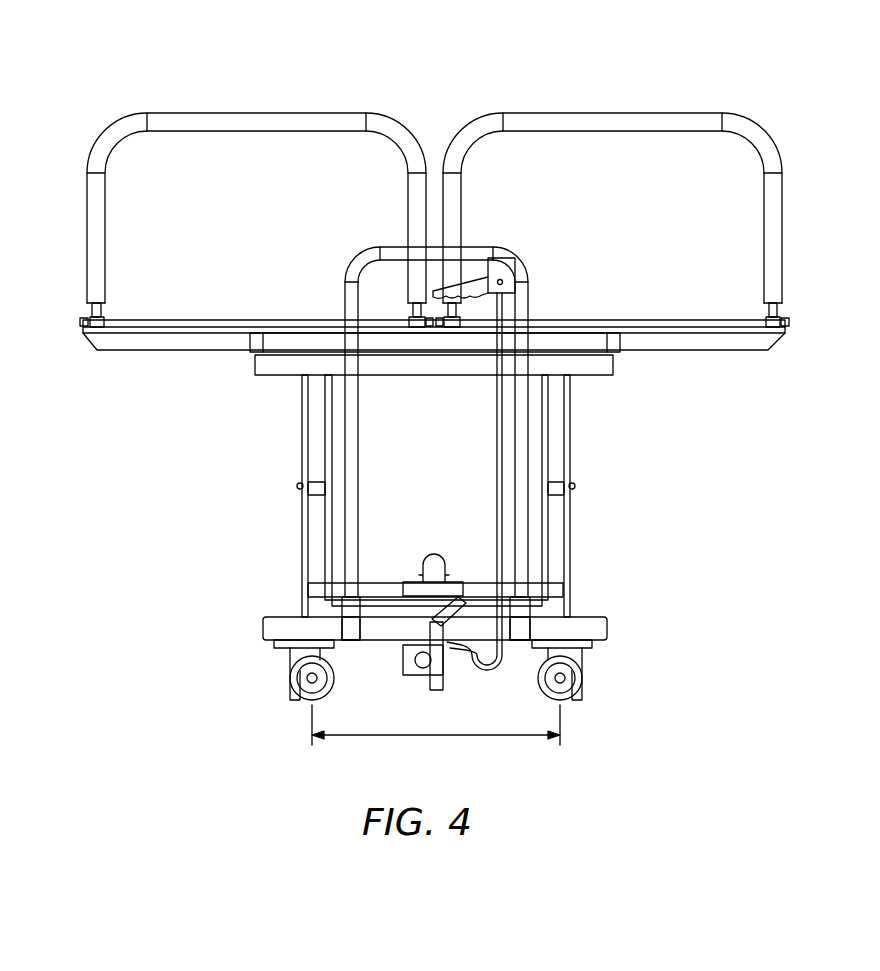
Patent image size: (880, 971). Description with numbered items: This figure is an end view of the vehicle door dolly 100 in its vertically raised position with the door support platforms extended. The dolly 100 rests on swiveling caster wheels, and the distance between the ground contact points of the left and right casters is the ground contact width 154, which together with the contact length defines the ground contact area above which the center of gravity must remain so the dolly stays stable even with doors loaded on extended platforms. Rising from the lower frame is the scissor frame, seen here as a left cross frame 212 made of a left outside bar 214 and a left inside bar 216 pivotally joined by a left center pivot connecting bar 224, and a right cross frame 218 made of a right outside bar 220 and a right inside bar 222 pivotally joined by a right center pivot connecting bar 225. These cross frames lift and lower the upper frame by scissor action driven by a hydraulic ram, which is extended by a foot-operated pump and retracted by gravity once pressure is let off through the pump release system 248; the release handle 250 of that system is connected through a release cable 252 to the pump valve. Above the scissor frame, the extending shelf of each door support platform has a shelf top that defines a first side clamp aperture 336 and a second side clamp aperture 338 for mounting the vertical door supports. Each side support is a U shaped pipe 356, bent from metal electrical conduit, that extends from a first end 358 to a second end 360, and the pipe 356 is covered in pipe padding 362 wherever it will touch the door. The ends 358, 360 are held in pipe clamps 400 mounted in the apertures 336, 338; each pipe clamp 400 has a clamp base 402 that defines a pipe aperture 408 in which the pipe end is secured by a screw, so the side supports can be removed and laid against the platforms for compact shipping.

The vehicle door dolly 100 is at (690, 56).
The pipe padding 362 is at (87, 212).
The first end 358 is at (101, 311).
The U shaped pipe 356 is at (82, 321).
The first side clamp aperture 336 is at (82, 325).
The pipe clamp 400 is at (105, 322).
The second end 360 is at (413, 310).
The second side clamp aperture 338 is at (415, 353).
The release handle 250 is at (470, 288).
The release cable 252 is at (504, 537).
The clamp base 402 is at (768, 318).
The pipe aperture 408 is at (777, 316).
The left cross frame 212 is at (302, 430).
The left outside bar 214 is at (308, 462).
The left inside bar 216 is at (325, 470).
The left center pivot connecting bar 224 is at (316, 495).
The right cross frame 218 is at (570, 420).
The right outside bar 220 is at (565, 457).
The right inside bar 222 is at (548, 466).
The right center pivot connecting bar 225 is at (557, 495).
The pump release system 248 is at (482, 668).
The ground contact width 154 is at (437, 738).